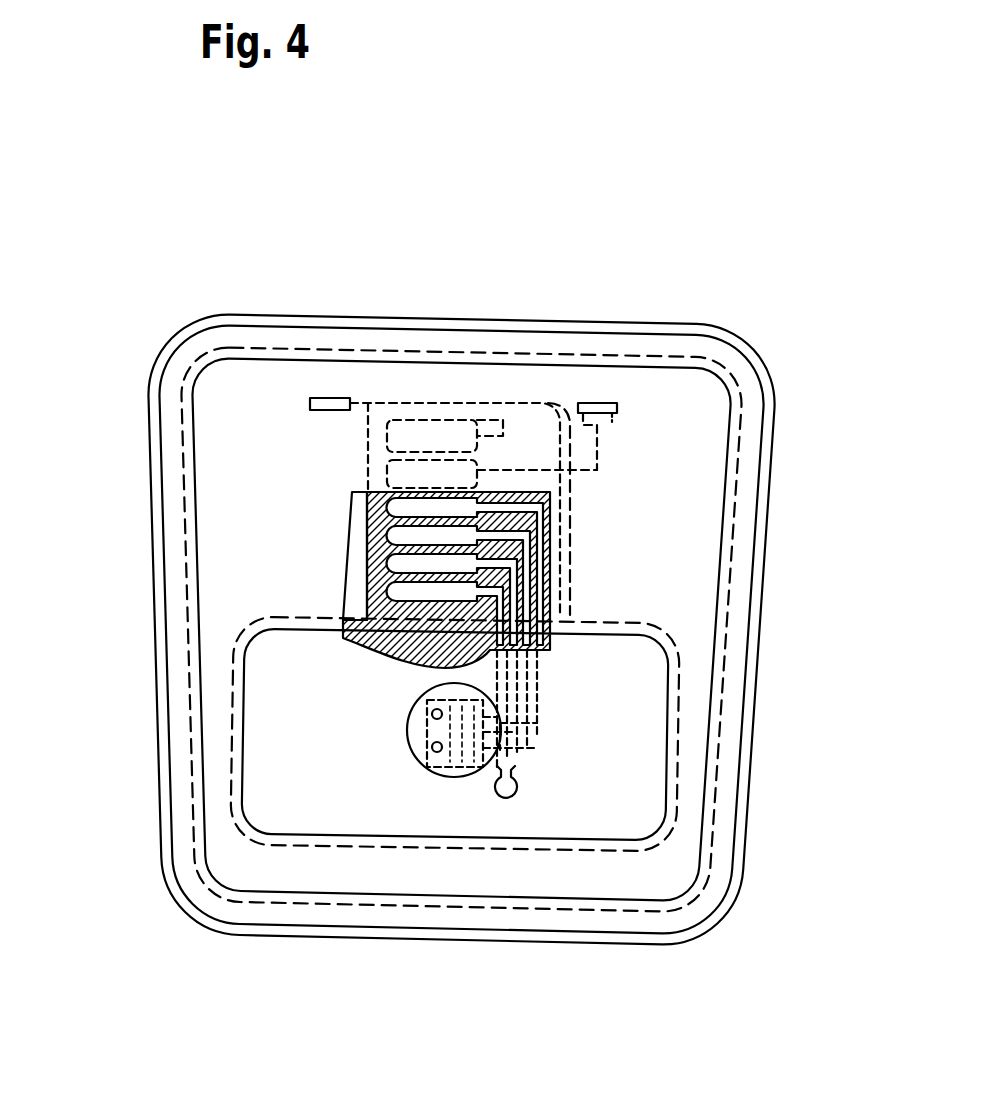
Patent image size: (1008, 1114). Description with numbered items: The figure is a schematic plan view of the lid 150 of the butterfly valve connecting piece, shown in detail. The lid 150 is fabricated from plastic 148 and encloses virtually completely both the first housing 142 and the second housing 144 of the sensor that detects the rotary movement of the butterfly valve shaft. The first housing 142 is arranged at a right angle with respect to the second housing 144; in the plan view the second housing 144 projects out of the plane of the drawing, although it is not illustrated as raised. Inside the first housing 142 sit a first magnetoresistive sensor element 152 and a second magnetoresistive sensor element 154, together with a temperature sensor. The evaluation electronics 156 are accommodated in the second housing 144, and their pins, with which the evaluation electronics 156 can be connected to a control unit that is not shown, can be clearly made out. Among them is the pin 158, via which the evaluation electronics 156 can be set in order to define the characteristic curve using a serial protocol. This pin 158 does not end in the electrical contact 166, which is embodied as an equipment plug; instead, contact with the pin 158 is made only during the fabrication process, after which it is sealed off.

The first housing 142 is at (425, 750).
The second housing 144 is at (463, 778).
The plastic 148 is at (240, 852).
The lid 150 is at (406, 277).
The first magnetoresistive sensor element 152 is at (432, 714).
The second magnetoresistive sensor element 154 is at (432, 748).
The evaluation electronics 156 is at (490, 718).
The pin 158 is at (505, 798).
The electrical contact 166 is at (597, 401).